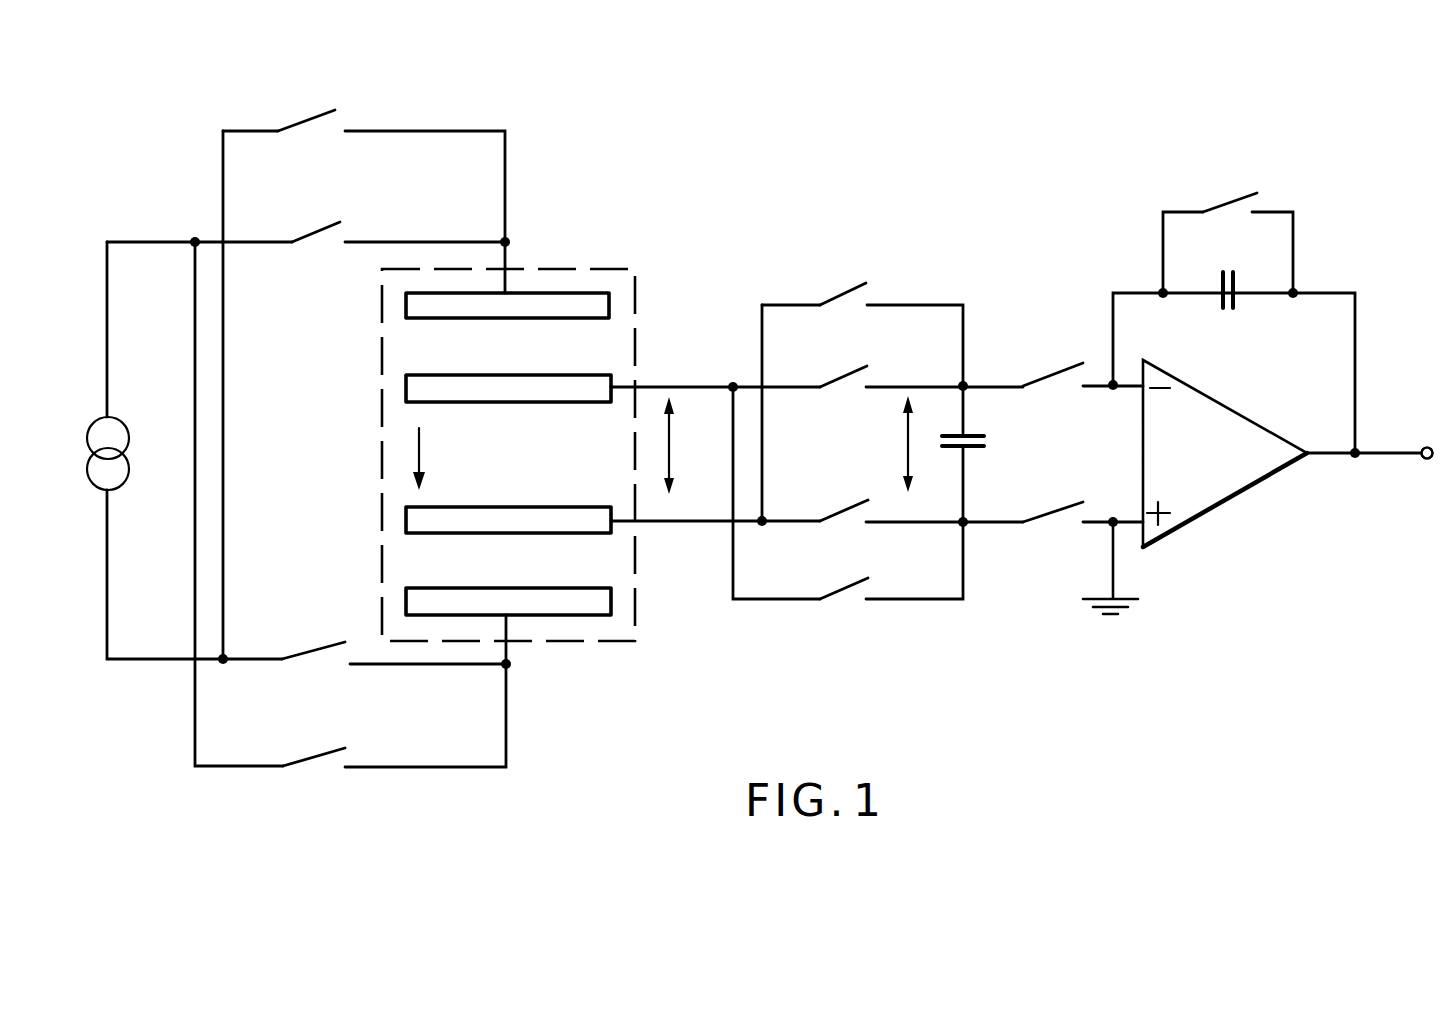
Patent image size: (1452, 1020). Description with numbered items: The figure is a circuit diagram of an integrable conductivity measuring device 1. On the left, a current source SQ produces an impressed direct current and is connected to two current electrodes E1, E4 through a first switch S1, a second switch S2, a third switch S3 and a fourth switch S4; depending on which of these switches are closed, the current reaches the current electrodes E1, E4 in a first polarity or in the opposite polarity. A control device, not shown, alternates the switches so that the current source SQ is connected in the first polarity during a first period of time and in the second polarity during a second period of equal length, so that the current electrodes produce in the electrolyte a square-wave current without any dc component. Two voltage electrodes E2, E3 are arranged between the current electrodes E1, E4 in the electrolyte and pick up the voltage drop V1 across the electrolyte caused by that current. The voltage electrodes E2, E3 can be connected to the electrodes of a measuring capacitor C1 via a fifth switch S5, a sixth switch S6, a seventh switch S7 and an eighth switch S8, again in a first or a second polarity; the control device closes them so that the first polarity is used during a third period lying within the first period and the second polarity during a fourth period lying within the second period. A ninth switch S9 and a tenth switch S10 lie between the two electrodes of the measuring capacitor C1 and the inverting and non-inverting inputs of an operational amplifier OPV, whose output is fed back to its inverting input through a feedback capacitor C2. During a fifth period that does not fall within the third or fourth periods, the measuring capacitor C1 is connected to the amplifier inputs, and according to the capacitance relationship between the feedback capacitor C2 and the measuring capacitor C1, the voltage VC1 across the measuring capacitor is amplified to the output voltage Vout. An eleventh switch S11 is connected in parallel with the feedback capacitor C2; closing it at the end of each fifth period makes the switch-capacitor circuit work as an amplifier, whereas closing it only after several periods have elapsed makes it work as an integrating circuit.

The integrable conductivity measuring device 1 is at (962, 151).
The current source SQ is at (129, 455).
The first switch S1 is at (318, 212).
The second switch S2 is at (306, 652).
The third switch S3 is at (298, 117).
The fourth switch S4 is at (309, 741).
The fifth switch S5 is at (834, 378).
The sixth switch S6 is at (842, 510).
The seventh switch S7 is at (836, 293).
The eighth switch S8 is at (838, 594).
The ninth switch S9 is at (1044, 374).
The tenth switch S10 is at (1052, 498).
The eleventh switch S11 is at (1222, 204).
The current electrode E1 is at (450, 334).
The voltage electrode E2 is at (446, 398).
The voltage electrode E3 is at (457, 512).
The current electrode E4 is at (462, 592).
The measuring capacitor C1 is at (975, 436).
The feedback capacitor C2 is at (1250, 302).
The operational amplifier OPV is at (1225, 453).
The voltage drop V1 is at (685, 418).
The voltage across the measuring capacitor VC1 is at (896, 440).
The output voltage Vout is at (1423, 475).